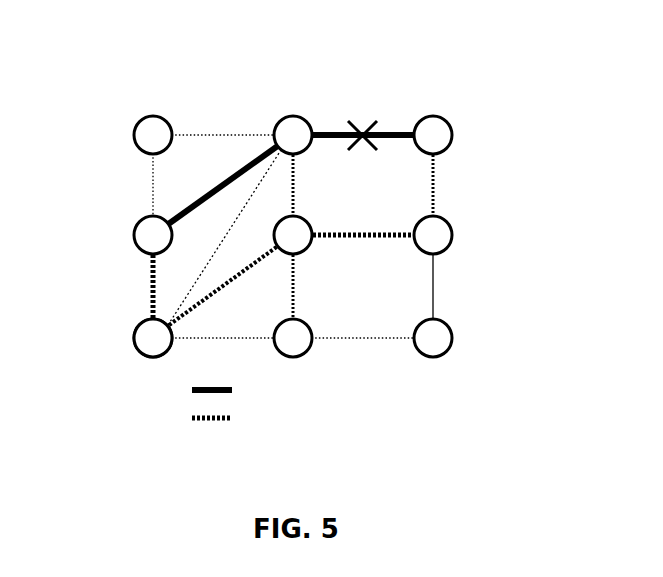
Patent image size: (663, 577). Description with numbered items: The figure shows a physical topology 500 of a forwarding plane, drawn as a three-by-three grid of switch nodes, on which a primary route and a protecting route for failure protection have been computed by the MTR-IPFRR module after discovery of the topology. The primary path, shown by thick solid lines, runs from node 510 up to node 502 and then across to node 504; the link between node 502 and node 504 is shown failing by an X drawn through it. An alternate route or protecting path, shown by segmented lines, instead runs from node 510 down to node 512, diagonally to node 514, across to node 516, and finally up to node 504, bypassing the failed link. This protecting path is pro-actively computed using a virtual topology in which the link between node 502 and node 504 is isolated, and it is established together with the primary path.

The network topology 500 is at (289, 215).
The node 502 is at (285, 116).
The node 504 is at (422, 116).
The node 510 is at (141, 250).
The node 512 is at (141, 352).
The node 514 is at (303, 246).
The node 516 is at (445, 247).